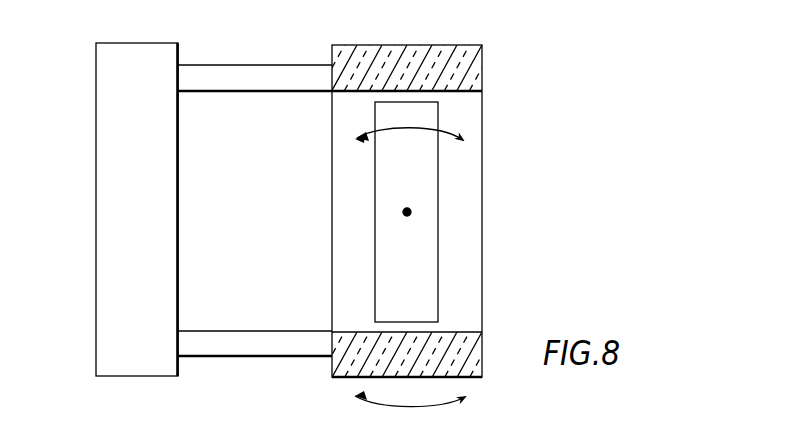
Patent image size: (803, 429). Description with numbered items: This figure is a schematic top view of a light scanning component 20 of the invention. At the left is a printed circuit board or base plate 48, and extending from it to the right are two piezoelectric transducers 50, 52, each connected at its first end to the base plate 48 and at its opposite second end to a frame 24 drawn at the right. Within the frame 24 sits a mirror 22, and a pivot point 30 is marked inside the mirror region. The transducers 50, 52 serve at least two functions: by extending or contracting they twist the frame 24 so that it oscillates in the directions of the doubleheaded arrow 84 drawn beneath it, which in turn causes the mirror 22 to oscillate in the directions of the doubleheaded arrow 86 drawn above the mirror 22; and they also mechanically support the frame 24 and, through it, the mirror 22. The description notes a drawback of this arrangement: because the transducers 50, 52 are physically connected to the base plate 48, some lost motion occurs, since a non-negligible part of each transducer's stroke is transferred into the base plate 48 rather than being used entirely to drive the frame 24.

The light scanning component 20 is at (511, 57).
The mirror 22 is at (430, 178).
The frame 24 is at (460, 358).
The pivot point 30 is at (410, 214).
The base plate 48 is at (113, 82).
The piezoelectric transducer 50 is at (226, 335).
The piezoelectric transducer 52 is at (258, 79).
The doubleheaded arrow 84 is at (450, 405).
The doubleheaded arrow 86 is at (447, 125).